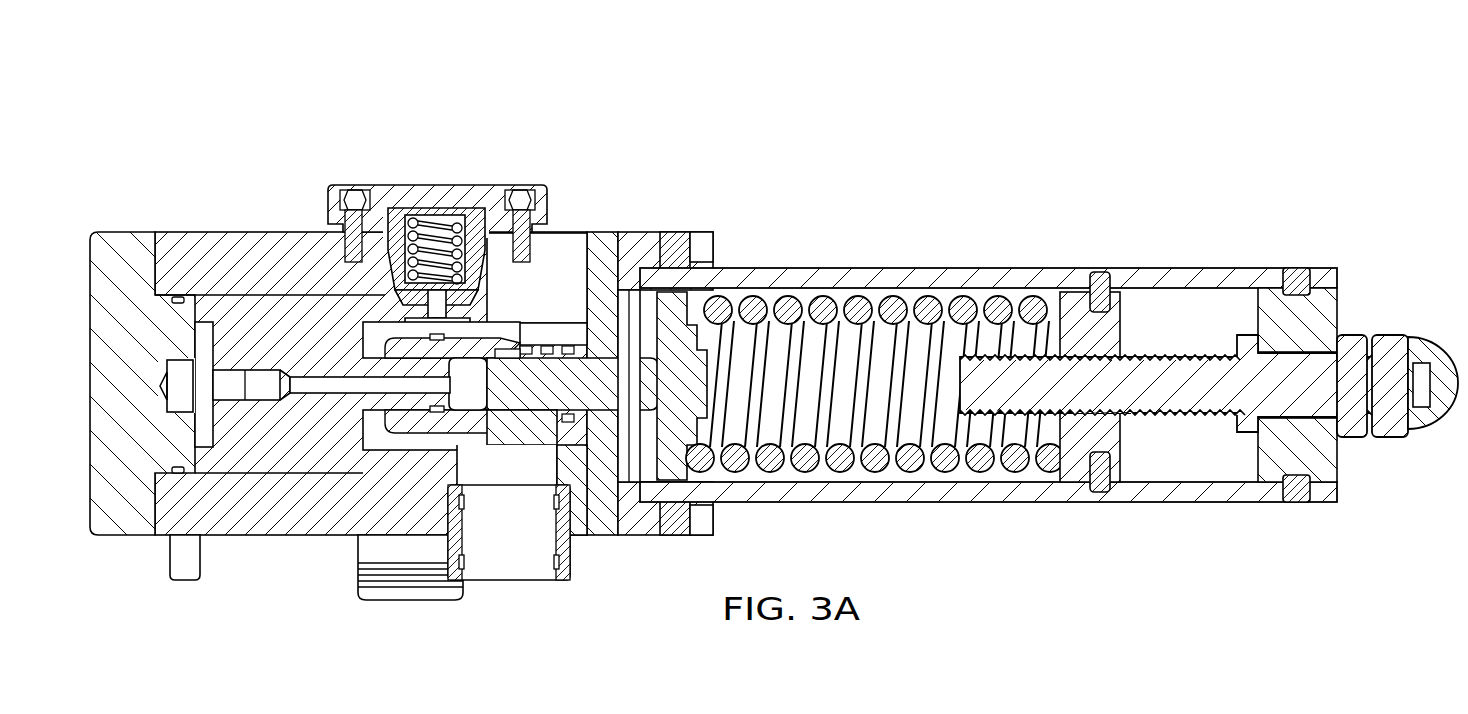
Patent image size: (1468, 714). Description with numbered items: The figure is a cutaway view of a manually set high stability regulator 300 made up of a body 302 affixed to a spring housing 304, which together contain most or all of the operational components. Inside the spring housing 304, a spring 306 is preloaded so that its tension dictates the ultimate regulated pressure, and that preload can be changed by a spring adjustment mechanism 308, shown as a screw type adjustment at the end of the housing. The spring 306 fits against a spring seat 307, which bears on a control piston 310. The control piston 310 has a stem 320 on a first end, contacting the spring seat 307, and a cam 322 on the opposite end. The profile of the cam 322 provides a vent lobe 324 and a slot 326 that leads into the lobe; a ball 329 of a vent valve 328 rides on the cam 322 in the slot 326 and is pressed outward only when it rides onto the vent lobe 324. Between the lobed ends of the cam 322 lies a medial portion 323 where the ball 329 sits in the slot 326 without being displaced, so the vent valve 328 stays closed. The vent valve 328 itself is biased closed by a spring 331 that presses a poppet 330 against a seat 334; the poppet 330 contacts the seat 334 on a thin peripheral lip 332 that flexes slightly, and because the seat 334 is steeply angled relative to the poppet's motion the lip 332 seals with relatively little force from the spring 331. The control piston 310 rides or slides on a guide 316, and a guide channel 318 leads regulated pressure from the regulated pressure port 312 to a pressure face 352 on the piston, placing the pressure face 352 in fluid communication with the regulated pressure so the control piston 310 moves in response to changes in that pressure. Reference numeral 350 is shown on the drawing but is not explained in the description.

The high stability regulator 300 is at (334, 98).
The body 302 is at (205, 243).
The spring housing 304 is at (960, 268).
The spring 306 is at (845, 292).
The spring seat 307 is at (700, 372).
The spring adjustment mechanism 308 is at (1168, 353).
The control piston 310 is at (525, 345).
The regulated pressure port 312 is at (508, 572).
The guide 316 is at (375, 433).
The guide channel 318 is at (291, 386).
The stem 320 is at (642, 392).
The cam 322 is at (436, 431).
The medial portion 323 is at (457, 442).
The vent lobe 324 is at (393, 332).
The slot 326 is at (497, 345).
The vent valve 328 is at (483, 193).
The ball 329 is at (398, 292).
The poppet 330 is at (428, 237).
The spring 331 is at (431, 223).
The peripheral lip 332 is at (480, 287).
The seat 334 is at (393, 292).
The piston sleeve 350 is at (456, 437).
The pressure face 352 is at (478, 368).